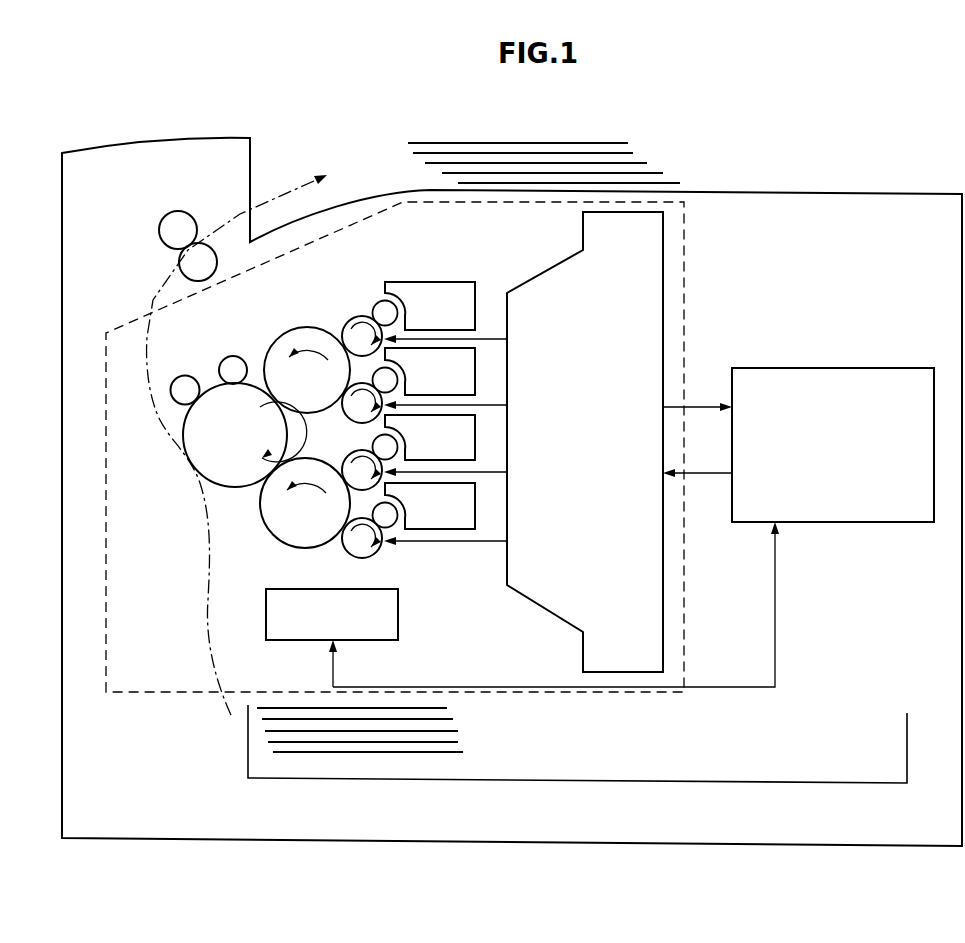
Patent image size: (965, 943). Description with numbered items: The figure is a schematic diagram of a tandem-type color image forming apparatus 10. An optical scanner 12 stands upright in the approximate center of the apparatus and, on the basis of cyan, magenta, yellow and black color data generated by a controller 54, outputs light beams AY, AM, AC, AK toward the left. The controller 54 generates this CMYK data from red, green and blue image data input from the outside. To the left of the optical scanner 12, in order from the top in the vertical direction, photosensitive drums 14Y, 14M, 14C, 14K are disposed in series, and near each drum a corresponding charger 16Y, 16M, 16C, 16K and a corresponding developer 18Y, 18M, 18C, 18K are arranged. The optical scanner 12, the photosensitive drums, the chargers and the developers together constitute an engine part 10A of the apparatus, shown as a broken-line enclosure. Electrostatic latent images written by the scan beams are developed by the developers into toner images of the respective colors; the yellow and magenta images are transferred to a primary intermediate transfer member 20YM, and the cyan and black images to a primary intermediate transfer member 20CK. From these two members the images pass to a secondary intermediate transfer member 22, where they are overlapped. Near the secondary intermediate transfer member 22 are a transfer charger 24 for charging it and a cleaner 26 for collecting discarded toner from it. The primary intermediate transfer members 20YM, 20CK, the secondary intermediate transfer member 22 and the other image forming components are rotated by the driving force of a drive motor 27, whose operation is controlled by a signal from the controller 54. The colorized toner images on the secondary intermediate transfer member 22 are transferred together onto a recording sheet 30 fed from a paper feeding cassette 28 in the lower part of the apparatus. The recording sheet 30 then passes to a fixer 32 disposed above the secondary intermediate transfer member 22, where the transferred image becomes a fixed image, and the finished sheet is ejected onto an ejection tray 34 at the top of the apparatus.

The color image forming apparatus 10 is at (903, 120).
The engine part 10A is at (688, 295).
The optical scanner 12 is at (550, 265).
The photosensitive drum 14Y is at (356, 320).
The photosensitive drum 14M is at (348, 397).
The photosensitive drum 14C is at (355, 452).
The photosensitive drum 14K is at (372, 553).
The charger 16Y is at (385, 300).
The charger 16M is at (387, 381).
The charger 16C is at (390, 448).
The charger 16K is at (390, 517).
The developer 18Y is at (443, 298).
The developer 18M is at (460, 359).
The developer 18C is at (460, 427).
The developer 18K is at (460, 496).
The primary intermediate transfer member 20YM is at (285, 362).
The primary intermediate transfer member 20CK is at (285, 527).
The secondary intermediate transfer member 22 is at (184, 435).
The transfer charger 24 is at (184, 386).
The cleaner 26 is at (233, 366).
The drive motor 27 is at (398, 613).
The paper feeding cassette 28 is at (584, 778).
The recording sheet 30 is at (573, 143).
The fixer 32 is at (170, 230).
The ejection tray 34 is at (728, 193).
The controller 54 is at (874, 368).
The light beam AY is at (495, 340).
The light beam AM is at (488, 405).
The light beam AC is at (487, 473).
The light beam AK is at (481, 543).